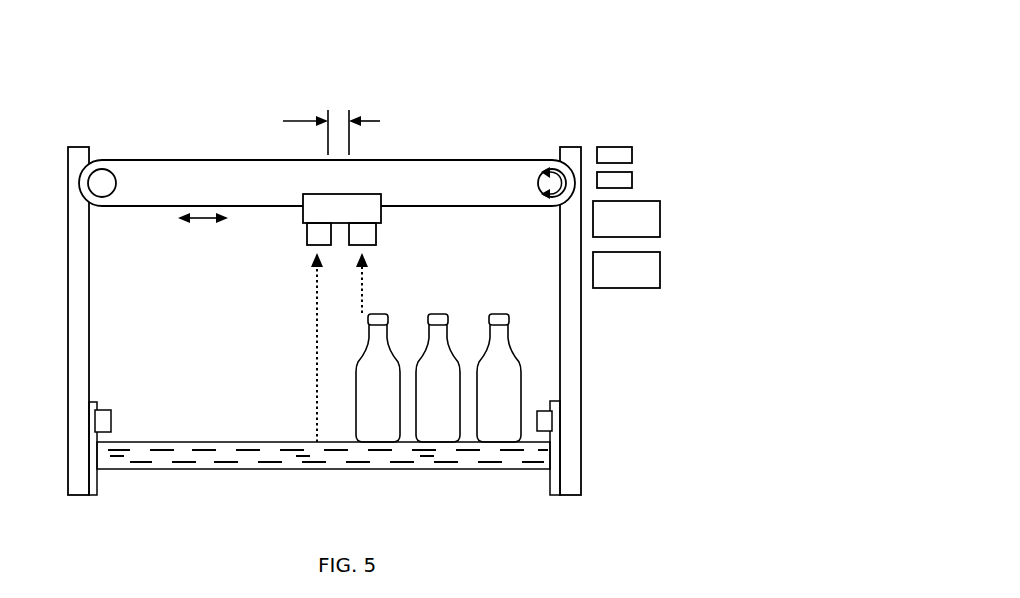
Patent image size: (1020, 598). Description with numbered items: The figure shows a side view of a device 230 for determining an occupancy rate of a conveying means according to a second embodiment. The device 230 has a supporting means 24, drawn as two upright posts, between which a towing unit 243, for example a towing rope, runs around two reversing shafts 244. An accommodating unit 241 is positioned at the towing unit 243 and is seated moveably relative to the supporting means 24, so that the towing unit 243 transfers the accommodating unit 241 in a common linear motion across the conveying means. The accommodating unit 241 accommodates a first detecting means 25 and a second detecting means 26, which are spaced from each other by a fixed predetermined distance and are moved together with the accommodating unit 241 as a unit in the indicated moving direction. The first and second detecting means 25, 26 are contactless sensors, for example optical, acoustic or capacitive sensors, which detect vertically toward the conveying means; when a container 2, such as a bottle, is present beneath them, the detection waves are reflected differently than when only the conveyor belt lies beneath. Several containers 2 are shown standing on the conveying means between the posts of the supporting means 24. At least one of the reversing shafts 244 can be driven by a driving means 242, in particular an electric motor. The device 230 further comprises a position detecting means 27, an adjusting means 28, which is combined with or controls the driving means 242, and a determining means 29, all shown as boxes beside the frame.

The device 230 is at (602, 77).
The supporting means 24 is at (68, 366).
The towing unit 243 is at (383, 160).
The reversing shafts 244 is at (108, 173).
The accommodating unit 241 is at (384, 196).
The second detecting means 26 is at (307, 237).
The first detecting means 25 is at (378, 233).
The driving means 242 is at (633, 153).
The position detecting means 27 is at (633, 178).
The adjusting means 28 is at (661, 215).
The determining means 29 is at (661, 266).
The containers 2 is at (380, 313).